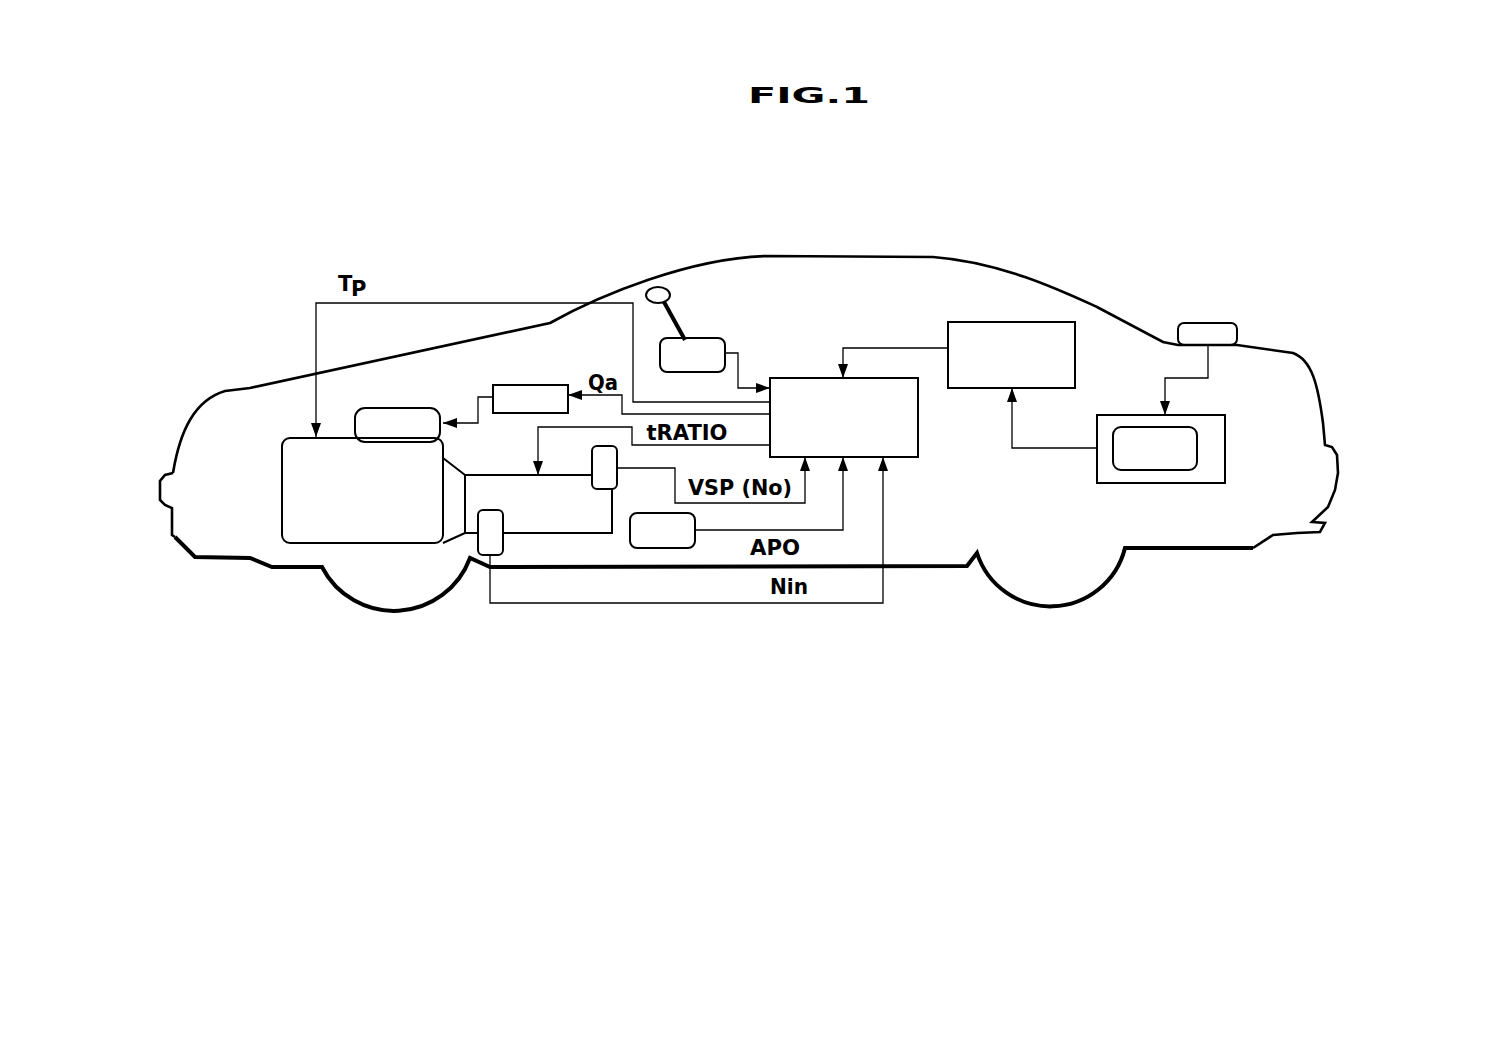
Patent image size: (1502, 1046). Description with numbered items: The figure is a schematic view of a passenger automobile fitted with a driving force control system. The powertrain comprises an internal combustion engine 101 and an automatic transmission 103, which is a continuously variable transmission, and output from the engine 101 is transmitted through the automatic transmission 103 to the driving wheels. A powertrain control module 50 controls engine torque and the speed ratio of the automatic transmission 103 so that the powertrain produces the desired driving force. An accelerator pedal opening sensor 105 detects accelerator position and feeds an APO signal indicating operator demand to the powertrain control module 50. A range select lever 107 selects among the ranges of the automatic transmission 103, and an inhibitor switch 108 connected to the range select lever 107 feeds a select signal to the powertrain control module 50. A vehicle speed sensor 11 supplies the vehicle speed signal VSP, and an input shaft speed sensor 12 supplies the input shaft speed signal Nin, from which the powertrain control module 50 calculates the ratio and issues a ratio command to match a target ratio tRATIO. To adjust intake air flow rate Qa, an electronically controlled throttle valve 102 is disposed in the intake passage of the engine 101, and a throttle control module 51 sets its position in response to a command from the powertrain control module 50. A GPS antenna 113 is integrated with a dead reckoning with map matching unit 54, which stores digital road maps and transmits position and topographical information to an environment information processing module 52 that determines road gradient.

The internal combustion engine 101 is at (365, 540).
The electronically controlled throttle valve 102 is at (388, 410).
The throttle control module (TCM) 51 is at (512, 385).
The range select lever 107 is at (658, 287).
The inhibitor switch 108 is at (712, 345).
The powertrain control module (PCM) 50 is at (903, 462).
The environment information processing module (EIPM) 52 is at (1053, 317).
The GPS antenna 113 is at (1212, 327).
The dead reckoning with map matching unit 54 is at (1168, 483).
The automatic transmission 103 is at (592, 547).
The input shaft speed sensor 12 is at (487, 533).
The vehicle speed sensor 11 is at (603, 490).
The accelerator pedal opening sensor 105 is at (678, 548).